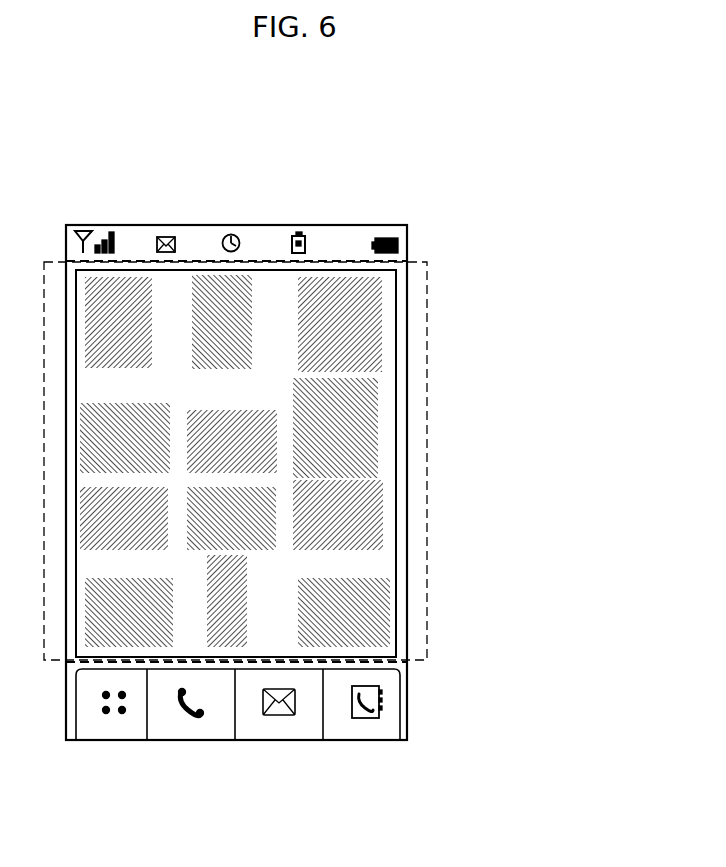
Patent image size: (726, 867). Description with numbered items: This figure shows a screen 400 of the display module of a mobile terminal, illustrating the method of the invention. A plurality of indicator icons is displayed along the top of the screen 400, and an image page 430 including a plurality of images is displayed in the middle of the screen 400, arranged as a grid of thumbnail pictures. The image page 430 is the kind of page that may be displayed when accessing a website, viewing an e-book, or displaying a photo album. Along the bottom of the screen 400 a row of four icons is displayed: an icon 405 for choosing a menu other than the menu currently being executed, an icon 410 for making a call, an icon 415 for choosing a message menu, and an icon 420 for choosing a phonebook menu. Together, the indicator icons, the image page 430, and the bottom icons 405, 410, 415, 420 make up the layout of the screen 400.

The screen 400 is at (257, 224).
The image page 430 is at (427, 464).
The icon for choosing a menu 405 is at (117, 729).
The icon for making a call 410 is at (198, 729).
The icon for choosing a message menu 415 is at (278, 729).
The icon for choosing a phonebook menu 420 is at (362, 729).